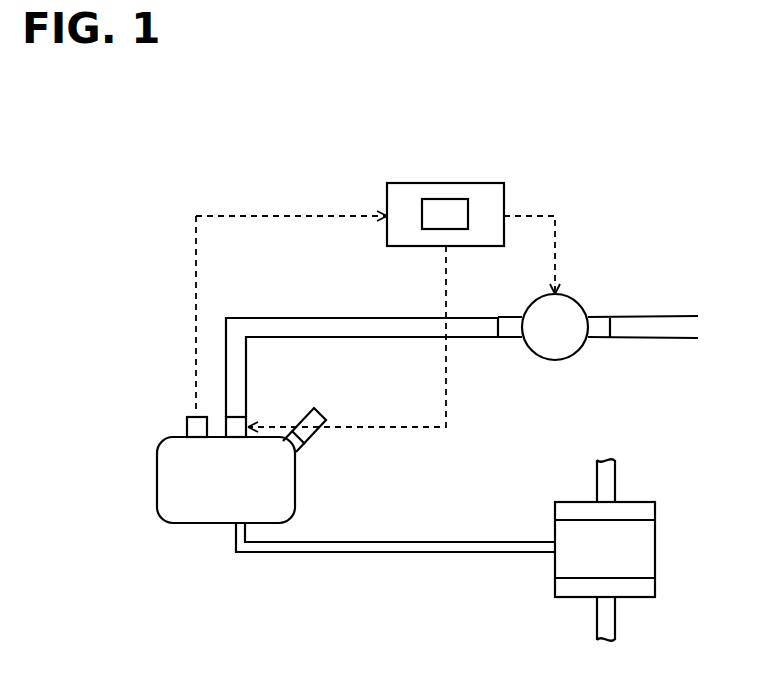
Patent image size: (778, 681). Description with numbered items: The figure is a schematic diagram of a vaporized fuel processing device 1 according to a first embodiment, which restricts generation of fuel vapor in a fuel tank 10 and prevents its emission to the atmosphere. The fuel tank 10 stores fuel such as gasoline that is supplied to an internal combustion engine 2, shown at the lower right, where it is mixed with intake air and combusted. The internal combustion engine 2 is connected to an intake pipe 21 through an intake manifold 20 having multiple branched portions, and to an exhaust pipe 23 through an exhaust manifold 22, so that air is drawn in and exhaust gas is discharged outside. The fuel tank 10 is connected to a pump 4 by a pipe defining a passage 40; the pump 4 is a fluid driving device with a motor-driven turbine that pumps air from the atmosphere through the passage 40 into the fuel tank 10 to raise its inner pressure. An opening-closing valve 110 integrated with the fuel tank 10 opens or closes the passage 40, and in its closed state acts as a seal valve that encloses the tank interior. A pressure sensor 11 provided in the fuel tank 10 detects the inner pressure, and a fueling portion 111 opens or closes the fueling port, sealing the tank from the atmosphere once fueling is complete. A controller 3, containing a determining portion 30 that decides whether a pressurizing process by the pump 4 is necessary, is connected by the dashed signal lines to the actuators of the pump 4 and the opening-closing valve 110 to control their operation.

The vaporized fuel processing device 1 is at (596, 206).
The internal combustion engine 2 is at (655, 548).
The controller 3 is at (405, 183).
The pump 4 is at (577, 300).
The fuel tank 10 is at (183, 525).
The pressure sensor 11 is at (187, 425).
The intake manifold 20 is at (655, 510).
The intake pipe 21 is at (615, 481).
The exhaust manifold 22 is at (655, 585).
The exhaust pipe 23 is at (615, 620).
The determining portion 30 is at (450, 199).
The passage 40 is at (330, 318).
The opening-closing valve 110 is at (225, 428).
The fueling portion 111 is at (315, 410).